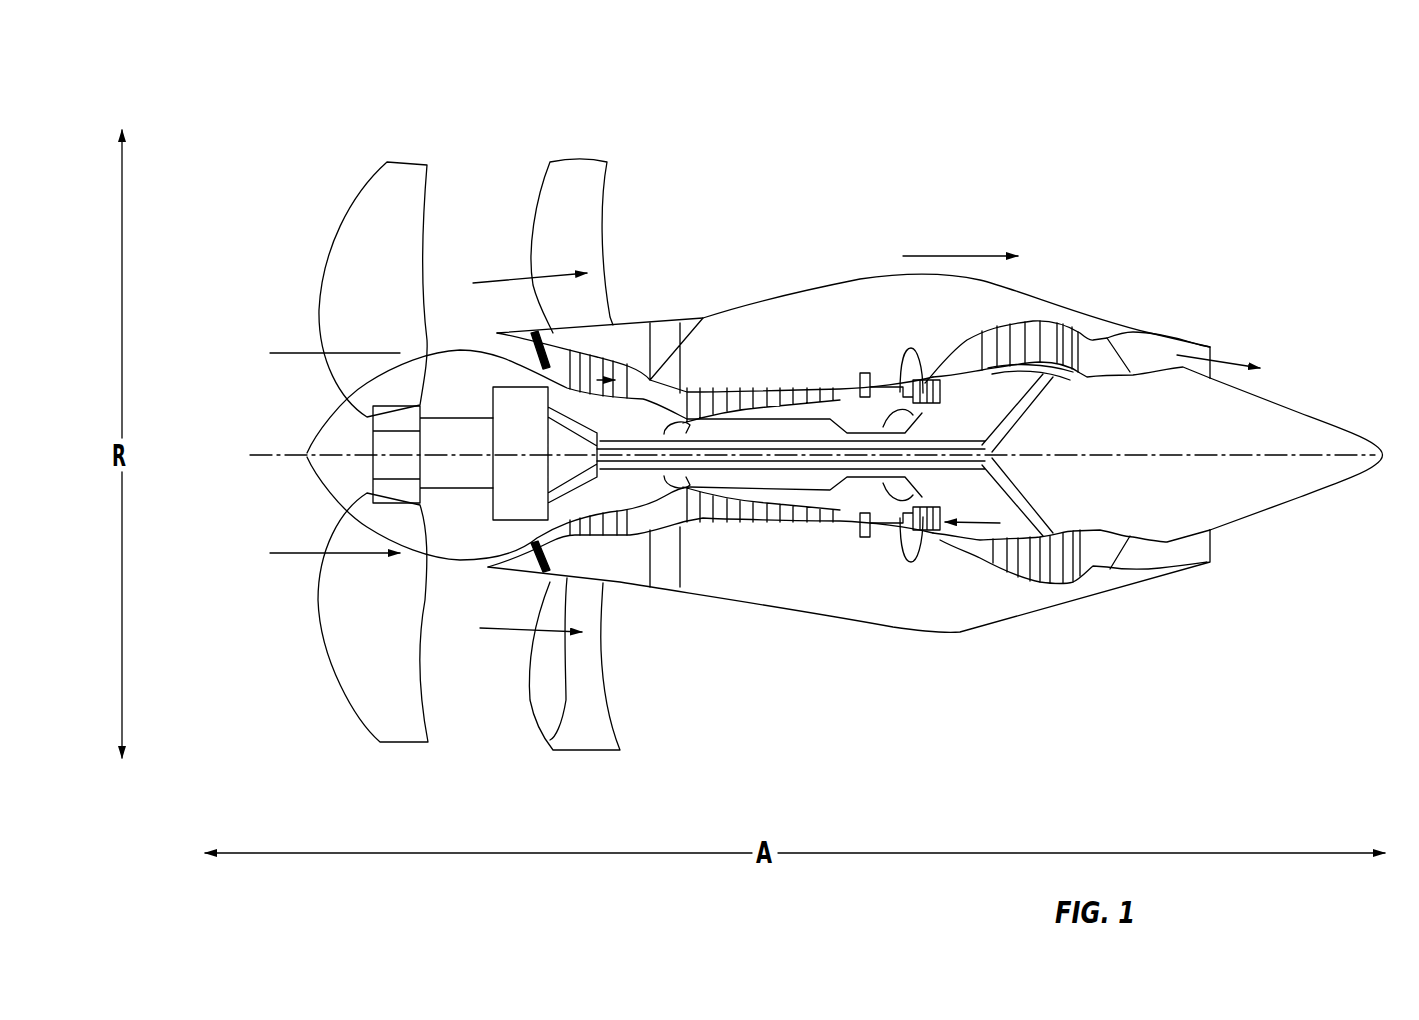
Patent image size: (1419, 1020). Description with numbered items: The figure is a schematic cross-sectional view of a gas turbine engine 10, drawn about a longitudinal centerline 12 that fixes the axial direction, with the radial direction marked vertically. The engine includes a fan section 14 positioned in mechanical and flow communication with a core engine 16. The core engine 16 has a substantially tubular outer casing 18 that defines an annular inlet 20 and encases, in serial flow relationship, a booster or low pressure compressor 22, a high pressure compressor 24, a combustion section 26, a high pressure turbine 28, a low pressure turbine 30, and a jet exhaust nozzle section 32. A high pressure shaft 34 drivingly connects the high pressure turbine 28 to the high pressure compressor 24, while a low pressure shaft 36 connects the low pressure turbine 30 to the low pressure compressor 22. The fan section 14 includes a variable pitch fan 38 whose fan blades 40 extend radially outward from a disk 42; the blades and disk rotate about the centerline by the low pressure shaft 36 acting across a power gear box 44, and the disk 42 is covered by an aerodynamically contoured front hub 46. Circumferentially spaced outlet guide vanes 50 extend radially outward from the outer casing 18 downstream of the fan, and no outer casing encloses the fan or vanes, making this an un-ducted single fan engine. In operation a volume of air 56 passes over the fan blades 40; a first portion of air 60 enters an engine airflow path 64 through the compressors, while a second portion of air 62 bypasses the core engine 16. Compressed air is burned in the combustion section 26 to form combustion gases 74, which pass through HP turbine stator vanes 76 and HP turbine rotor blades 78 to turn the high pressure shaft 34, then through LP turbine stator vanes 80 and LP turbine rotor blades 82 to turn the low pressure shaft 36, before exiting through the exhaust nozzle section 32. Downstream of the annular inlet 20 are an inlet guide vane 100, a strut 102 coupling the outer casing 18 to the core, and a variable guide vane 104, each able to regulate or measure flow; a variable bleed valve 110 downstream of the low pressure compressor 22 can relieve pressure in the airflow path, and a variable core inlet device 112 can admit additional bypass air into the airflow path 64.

The gas turbine engine 10 is at (1127, 197).
The longitudinal centerline 12 is at (1150, 450).
The fan section 14 is at (455, 70).
The core engine 16 is at (823, 284).
The outer casing 18 is at (840, 617).
The annular inlet 20 is at (486, 569).
The low pressure compressor 22 is at (604, 542).
The high pressure compressor 24 is at (722, 518).
The combustion section 26 is at (882, 518).
The high pressure turbine 28 is at (1023, 507).
The low pressure turbine 30 is at (1067, 580).
The jet exhaust nozzle section 32 is at (1128, 557).
The high pressure shaft 34 is at (883, 427).
The low pressure shaft 36 is at (613, 433).
The variable pitch fan 38 is at (298, 312).
The fan blades 40 is at (357, 663).
The disk 42 is at (393, 420).
The power gear box 44 is at (510, 407).
The front hub 46 is at (327, 488).
The outlet guide vanes 50 is at (578, 197).
The volume of air 56 is at (357, 353).
The first portion of air 60 is at (560, 353).
The second portion of air 62 is at (510, 280).
The engine airflow path 64 is at (702, 519).
The combustion gases 74 is at (990, 349).
The HP turbine stator vanes 76 is at (897, 533).
The HP turbine rotor blades 78 is at (985, 480).
The LP turbine stator vanes 80 is at (990, 560).
The LP turbine rotor blades 82 is at (1000, 567).
The inlet guide vane 100 is at (503, 580).
The strut 102 is at (550, 738).
The variable guide vane 104 is at (575, 566).
The variable bleed valve 110 is at (667, 337).
The variable core inlet device 112 is at (540, 328).